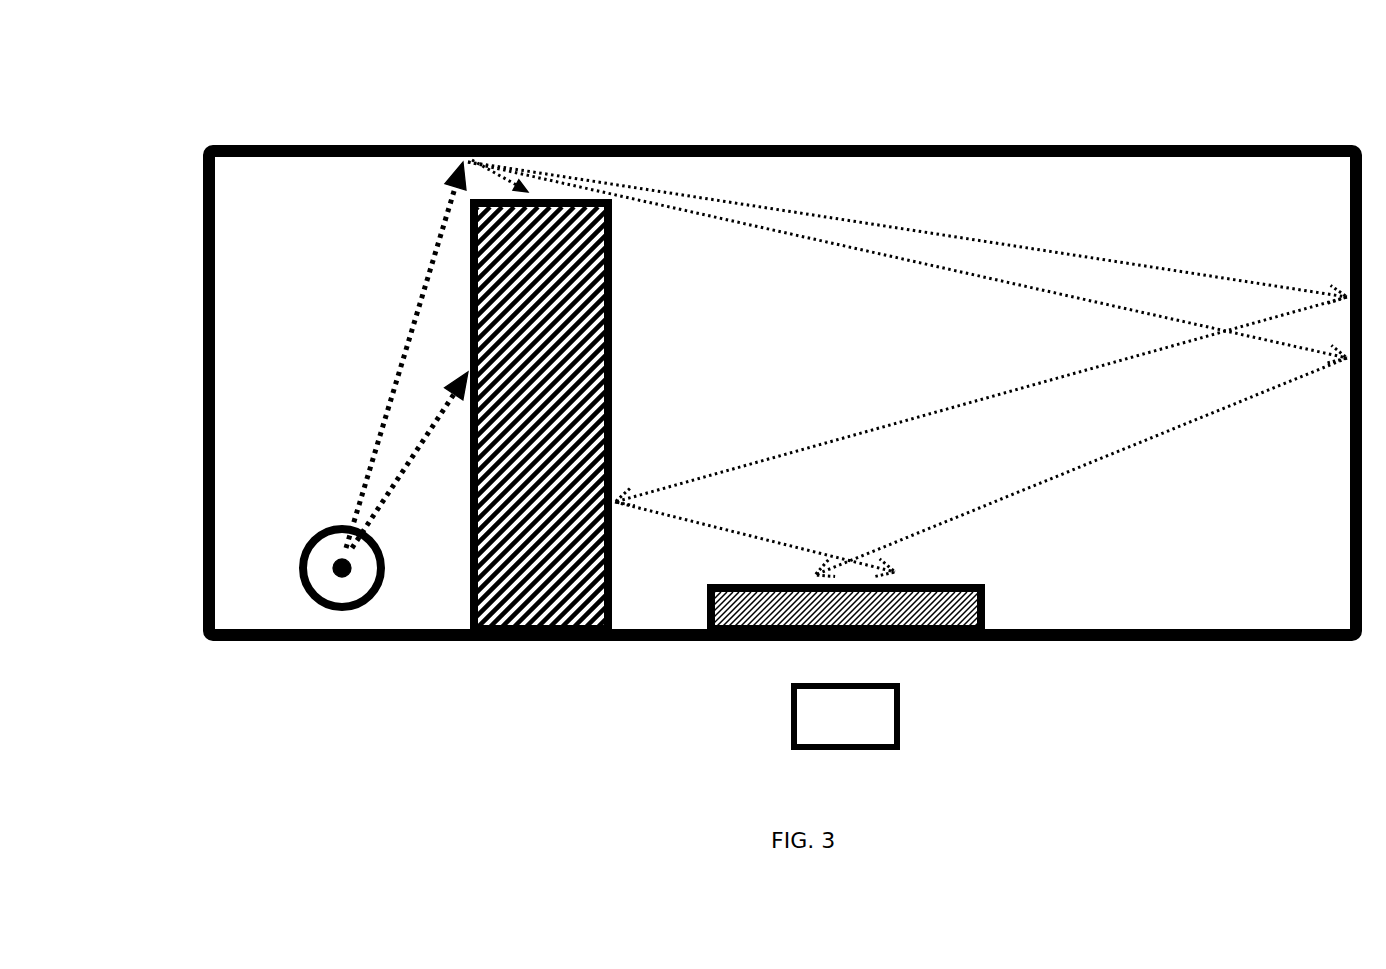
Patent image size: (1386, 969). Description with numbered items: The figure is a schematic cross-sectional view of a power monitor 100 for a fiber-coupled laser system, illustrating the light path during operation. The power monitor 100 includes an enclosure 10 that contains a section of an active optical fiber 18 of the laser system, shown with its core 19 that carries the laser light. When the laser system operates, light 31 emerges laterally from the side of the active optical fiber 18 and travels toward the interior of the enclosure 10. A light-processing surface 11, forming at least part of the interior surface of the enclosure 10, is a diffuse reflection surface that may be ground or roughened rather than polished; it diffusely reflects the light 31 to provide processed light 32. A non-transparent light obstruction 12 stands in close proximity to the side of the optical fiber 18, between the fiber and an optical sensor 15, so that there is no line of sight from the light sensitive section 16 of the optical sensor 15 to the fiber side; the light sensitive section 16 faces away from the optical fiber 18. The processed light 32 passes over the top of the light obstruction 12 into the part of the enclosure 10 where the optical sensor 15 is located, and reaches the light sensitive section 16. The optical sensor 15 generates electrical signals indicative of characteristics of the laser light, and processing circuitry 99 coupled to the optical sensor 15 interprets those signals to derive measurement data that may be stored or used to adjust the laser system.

The enclosure 10 is at (340, 112).
The light-processing surface 11 is at (460, 157).
The light obstruction 12 is at (478, 592).
The optical sensor 15 is at (985, 604).
The light sensitive section 16 is at (932, 585).
The active optical fiber 18 is at (305, 555).
The core 19 is at (342, 568).
The light 31 is at (362, 367).
The processed light 32 is at (1000, 218).
The processing circuitry 99 is at (832, 641).
The power monitor 100 is at (412, 787).